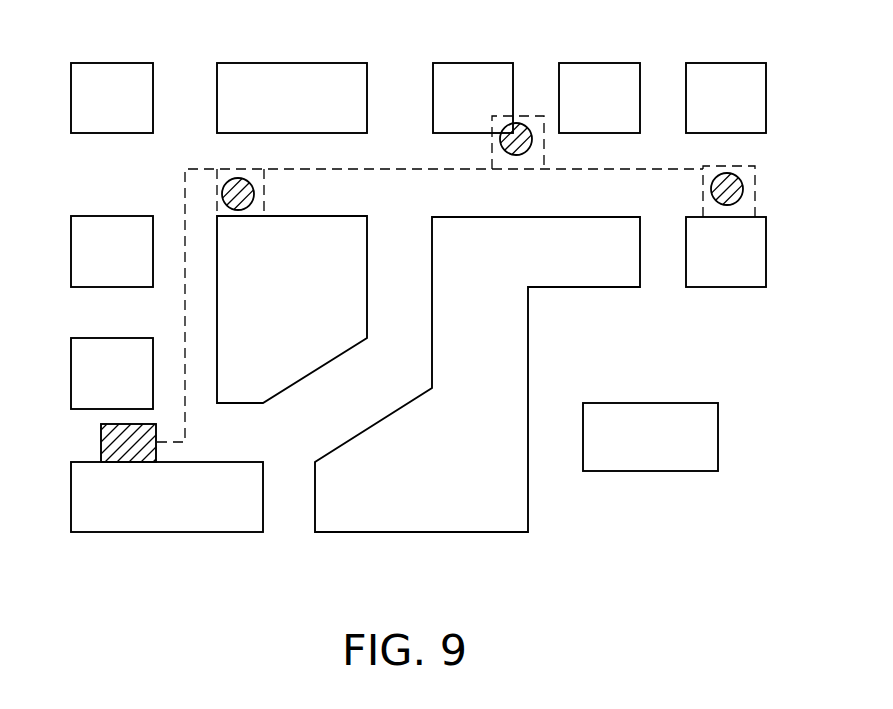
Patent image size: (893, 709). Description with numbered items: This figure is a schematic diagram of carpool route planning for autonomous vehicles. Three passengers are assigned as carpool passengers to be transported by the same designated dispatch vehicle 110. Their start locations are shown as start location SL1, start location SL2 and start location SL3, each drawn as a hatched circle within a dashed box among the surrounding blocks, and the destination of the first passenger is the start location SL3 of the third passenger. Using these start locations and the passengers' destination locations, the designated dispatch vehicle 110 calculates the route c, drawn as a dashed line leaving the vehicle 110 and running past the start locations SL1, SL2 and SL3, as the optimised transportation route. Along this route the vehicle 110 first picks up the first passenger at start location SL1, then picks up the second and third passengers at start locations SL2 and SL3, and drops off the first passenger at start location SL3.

The start location SL1 is at (250, 234).
The start location SL2 is at (539, 92).
The start location SL3 is at (770, 205).
The route c is at (183, 308).
The designated dispatch vehicle 110 is at (101, 443).